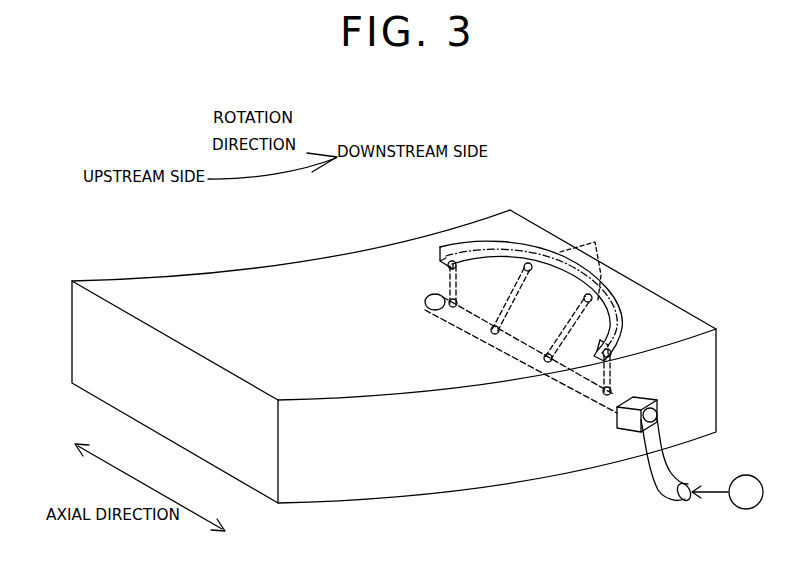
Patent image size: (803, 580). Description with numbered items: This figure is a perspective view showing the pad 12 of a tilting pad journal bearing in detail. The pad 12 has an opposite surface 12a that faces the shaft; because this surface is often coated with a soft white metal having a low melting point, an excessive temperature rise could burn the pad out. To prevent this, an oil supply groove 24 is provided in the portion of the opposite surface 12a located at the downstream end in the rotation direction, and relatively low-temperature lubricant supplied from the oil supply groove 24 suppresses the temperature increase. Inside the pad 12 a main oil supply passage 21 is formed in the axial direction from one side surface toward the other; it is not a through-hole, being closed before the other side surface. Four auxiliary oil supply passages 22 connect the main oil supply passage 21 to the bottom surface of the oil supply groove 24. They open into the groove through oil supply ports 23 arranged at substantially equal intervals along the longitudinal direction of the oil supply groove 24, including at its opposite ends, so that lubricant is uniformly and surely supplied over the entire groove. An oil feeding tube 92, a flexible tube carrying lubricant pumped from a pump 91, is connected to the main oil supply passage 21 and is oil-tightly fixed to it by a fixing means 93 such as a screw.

The pad 12 is at (615, 210).
The opposite surface 12a is at (322, 256).
The main oil supply passage 21 is at (586, 400).
The auxiliary oil supply passages 22 is at (449, 286).
The oil supply ports 23 is at (440, 257).
The oil supply groove 24 is at (488, 243).
The pump 91 is at (745, 510).
The oil feeding tube 92 is at (660, 483).
The fixing means 93 is at (650, 404).